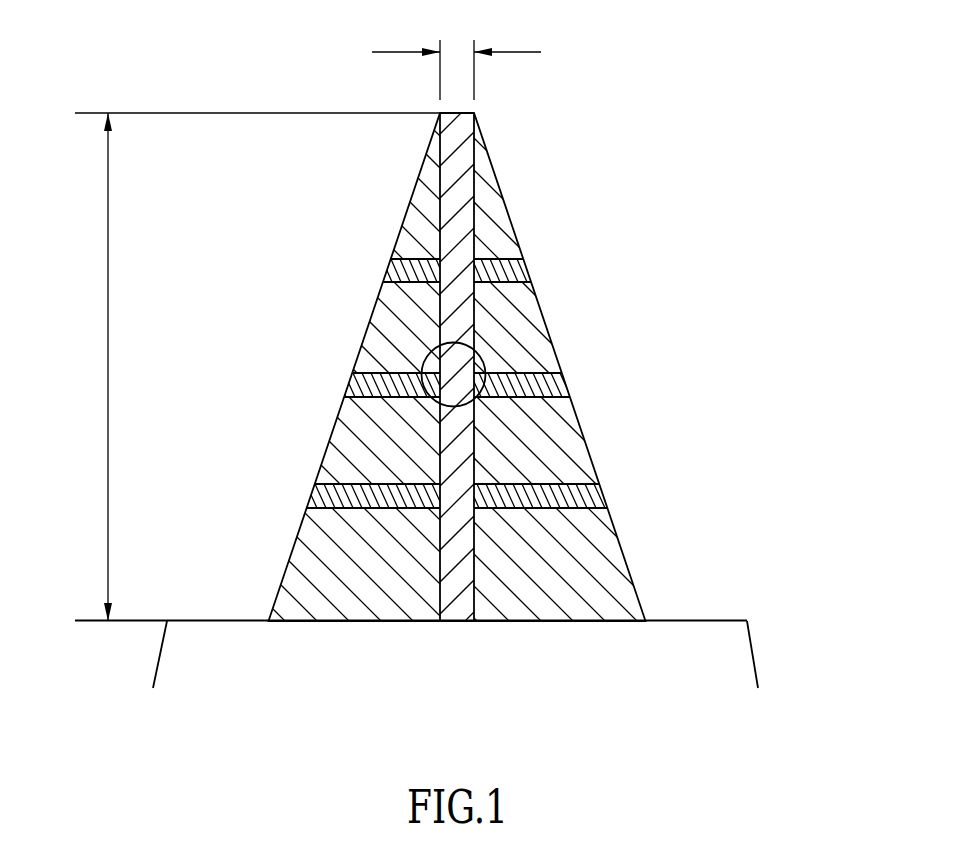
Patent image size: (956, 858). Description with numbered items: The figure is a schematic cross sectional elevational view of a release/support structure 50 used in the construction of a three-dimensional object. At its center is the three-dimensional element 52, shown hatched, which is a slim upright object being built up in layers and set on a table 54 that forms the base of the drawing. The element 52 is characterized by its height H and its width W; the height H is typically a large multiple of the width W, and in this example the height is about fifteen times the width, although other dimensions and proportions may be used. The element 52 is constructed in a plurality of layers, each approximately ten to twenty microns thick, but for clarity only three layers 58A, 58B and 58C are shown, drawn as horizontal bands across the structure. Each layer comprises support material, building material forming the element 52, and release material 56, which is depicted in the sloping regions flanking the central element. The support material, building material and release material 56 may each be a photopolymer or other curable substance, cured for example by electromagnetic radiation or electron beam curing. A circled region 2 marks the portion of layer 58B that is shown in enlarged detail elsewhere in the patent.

The release/support structure 50 is at (708, 176).
The 3-D element 52 is at (462, 168).
The table 54 is at (682, 619).
The release material 56 is at (308, 553).
The first layer 58A is at (520, 268).
The second layer 58B is at (552, 385).
The third layer 58C is at (590, 497).
The detail region 2 is at (428, 352).
The height H is at (108, 342).
The width W is at (515, 52).